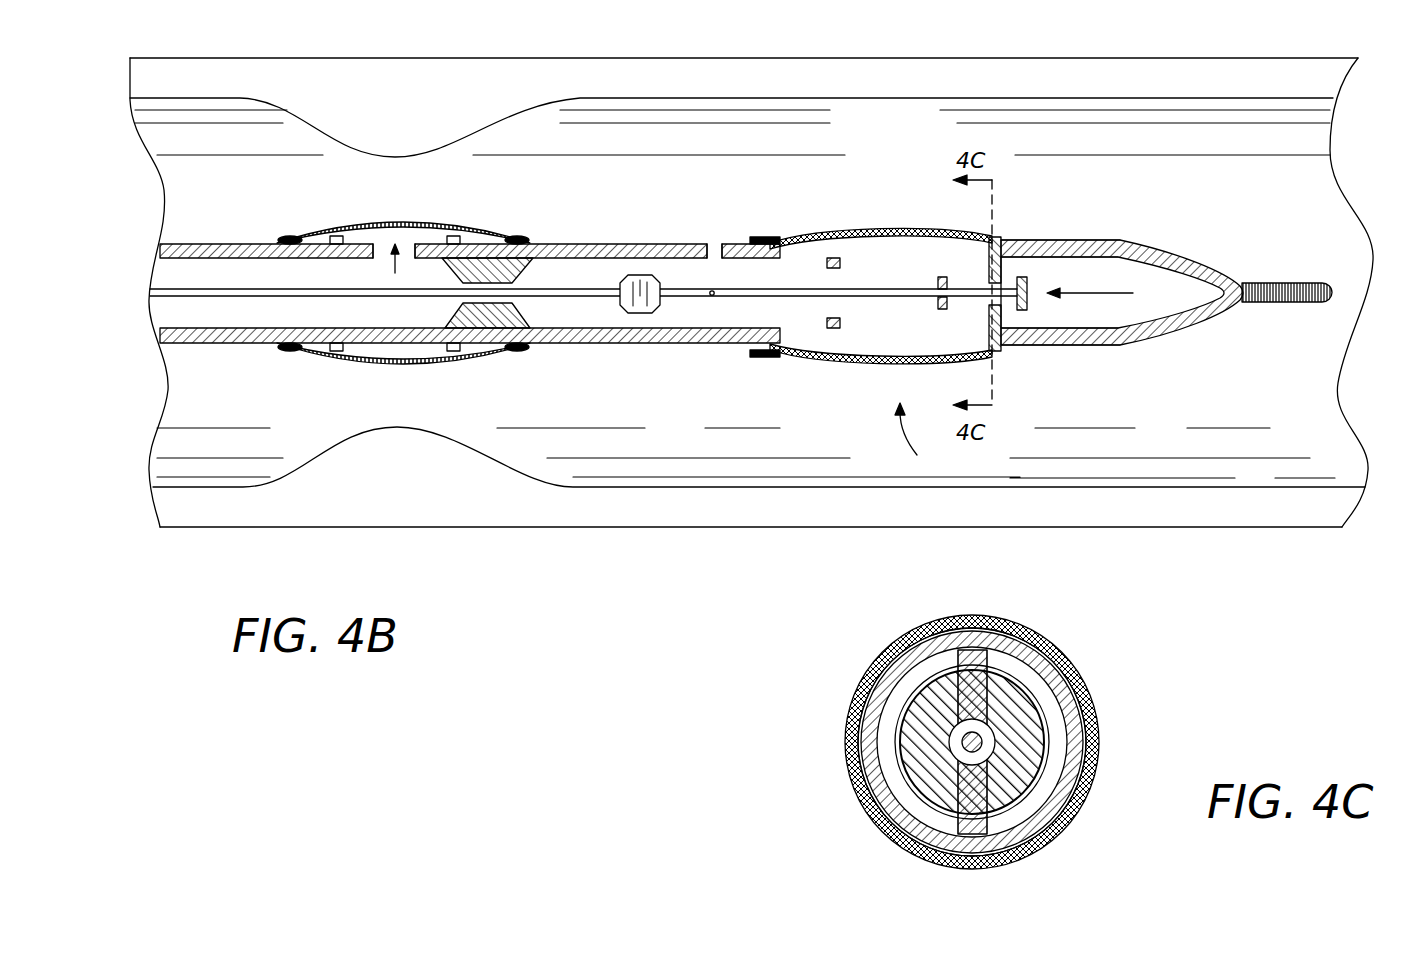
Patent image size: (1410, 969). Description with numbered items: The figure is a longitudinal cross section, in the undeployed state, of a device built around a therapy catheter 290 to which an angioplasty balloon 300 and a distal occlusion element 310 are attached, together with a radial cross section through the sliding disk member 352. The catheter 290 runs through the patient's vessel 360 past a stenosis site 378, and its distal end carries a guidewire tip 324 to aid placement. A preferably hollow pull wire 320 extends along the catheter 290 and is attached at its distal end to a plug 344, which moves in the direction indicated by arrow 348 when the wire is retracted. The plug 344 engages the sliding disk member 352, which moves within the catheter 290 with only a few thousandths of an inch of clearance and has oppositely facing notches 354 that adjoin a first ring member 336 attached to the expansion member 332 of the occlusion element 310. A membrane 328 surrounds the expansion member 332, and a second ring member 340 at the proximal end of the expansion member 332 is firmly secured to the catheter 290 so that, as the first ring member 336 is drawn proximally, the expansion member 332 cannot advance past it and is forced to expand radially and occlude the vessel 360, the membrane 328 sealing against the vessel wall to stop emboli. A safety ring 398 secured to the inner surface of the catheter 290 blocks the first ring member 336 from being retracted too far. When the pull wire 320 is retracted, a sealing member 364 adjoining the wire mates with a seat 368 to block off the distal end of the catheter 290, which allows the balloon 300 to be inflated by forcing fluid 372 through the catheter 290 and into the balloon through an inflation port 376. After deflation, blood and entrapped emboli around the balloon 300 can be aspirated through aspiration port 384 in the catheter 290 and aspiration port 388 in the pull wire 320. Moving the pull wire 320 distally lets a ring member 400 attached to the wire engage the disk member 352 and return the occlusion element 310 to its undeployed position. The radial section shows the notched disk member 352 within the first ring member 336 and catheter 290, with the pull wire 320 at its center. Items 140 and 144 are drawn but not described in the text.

In FIG. 4B, the electrodes 140 is at (300, 237).
In FIG. 4B, the lower balloon 144 is at (340, 357).
In FIG. 4B, the therapy catheter 290 is at (227, 344).
In FIG. 4C, the therapy catheter 290 is at (887, 760).
In FIG. 4B, the angioplasty balloon 300 is at (363, 222).
In FIG. 4B, the occlusion element 310 is at (928, 438).
In FIG. 4B, the pull wire 320 is at (178, 298).
In FIG. 4B, the guidewire tip 324 is at (1300, 307).
In FIG. 4B, the membrane 328 is at (777, 355).
In FIG. 4B, the expansion member 332 is at (867, 348).
In FIG. 4C, the expansion member 332 is at (987, 617).
In FIG. 4B, the first ring member 336 is at (1000, 240).
In FIG. 4C, the first ring member 336 is at (1083, 710).
In FIG. 4B, the second ring member 340 is at (752, 237).
In FIG. 4B, the plug 344 is at (1005, 312).
In FIG. 4B, the arrow 348 is at (1103, 287).
In FIG. 4B, the sliding disk member 352 is at (1027, 307).
In FIG. 4C, the sliding disk member 352 is at (1033, 793).
In FIG. 4B, the notches 354 is at (1002, 244).
In FIG. 4C, the notches 354 is at (1050, 638).
In FIG. 4B, the vessel 360 is at (830, 90).
In FIG. 4B, the sealing member 364 is at (643, 278).
In FIG. 4B, the seat 368 is at (537, 330).
In FIG. 4B, the fluid 372 is at (393, 273).
In FIG. 4B, the inflation port 376 is at (405, 235).
In FIG. 4B, the stenosis site 378 is at (465, 498).
In FIG. 4B, the aspiration port 384 is at (712, 240).
In FIG. 4B, the aspiration port 388 is at (712, 297).
In FIG. 4B, the safety ring 398 is at (829, 258).
In FIG. 4B, the ring member 400 is at (937, 277).